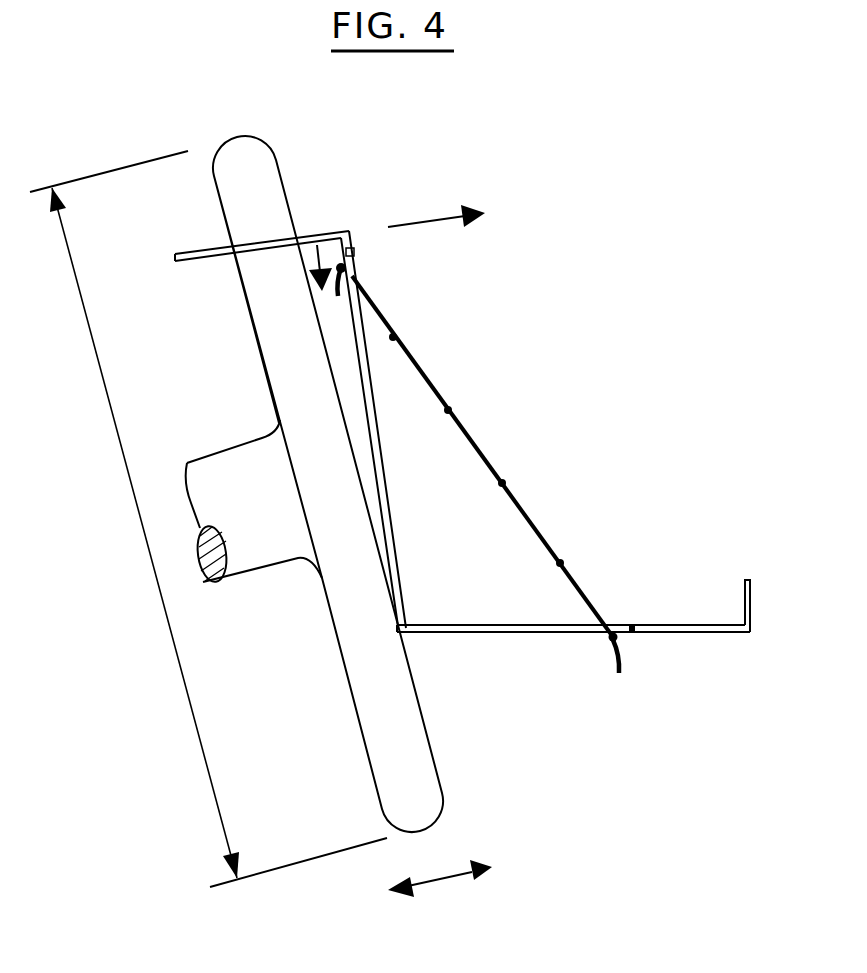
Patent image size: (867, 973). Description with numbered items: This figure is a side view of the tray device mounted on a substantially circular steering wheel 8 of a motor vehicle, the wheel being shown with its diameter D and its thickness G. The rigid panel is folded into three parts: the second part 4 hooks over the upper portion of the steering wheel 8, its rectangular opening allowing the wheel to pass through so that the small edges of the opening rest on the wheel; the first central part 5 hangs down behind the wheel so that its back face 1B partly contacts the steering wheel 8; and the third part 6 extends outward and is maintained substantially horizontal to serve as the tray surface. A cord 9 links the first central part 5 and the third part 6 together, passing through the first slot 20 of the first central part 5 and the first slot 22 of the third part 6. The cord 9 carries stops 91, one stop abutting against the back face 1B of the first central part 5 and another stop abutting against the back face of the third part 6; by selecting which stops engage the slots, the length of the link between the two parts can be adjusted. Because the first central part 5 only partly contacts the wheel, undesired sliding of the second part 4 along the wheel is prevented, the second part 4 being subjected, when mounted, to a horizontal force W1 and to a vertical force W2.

The steering wheel 8 is at (268, 190).
The second part 4 is at (312, 232).
The first central part 5 is at (400, 546).
The first slot 20 is at (354, 252).
The stops 91 is at (338, 300).
The cord 9 is at (483, 448).
The back face 1B is at (463, 637).
The third part 6 is at (705, 626).
The first slot of the third part 22 is at (634, 634).
The diameter of the wheel D is at (170, 637).
The horizontal force W1 is at (415, 224).
The vertical force W2 is at (313, 253).
The thickness of the wheel G is at (437, 882).